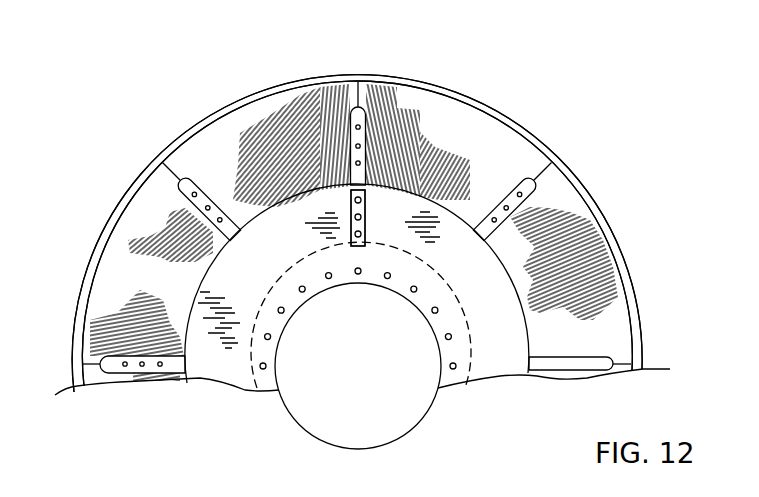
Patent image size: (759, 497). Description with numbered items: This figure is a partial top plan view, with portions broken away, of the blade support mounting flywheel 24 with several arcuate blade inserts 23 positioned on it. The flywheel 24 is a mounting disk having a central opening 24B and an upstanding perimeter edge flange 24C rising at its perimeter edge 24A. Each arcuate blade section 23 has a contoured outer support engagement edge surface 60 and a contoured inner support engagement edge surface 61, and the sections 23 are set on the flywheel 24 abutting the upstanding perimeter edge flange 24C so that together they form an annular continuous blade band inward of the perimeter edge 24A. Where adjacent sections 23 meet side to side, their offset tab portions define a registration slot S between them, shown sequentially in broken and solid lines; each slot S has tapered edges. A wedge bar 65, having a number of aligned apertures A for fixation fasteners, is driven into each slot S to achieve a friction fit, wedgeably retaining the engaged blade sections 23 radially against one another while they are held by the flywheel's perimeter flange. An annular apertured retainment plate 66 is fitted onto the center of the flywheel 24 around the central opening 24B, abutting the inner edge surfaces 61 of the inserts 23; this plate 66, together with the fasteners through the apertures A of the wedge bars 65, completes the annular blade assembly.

The arcuate blade insert 23 is at (467, 140).
The blade support mounting flywheel 24 is at (500, 376).
The perimeter edge 24A is at (92, 266).
The central opening 24B is at (316, 424).
The upstanding perimeter edge flange 24C is at (583, 190).
The outer support engagement edge surface 60 is at (617, 269).
The inner support engagement edge surface 61 is at (185, 328).
The wedge bar 65 is at (352, 205).
The annular apertured retainment plate 66 is at (232, 378).
The registration slot S is at (197, 183).
The aligned apertures A is at (351, 240).